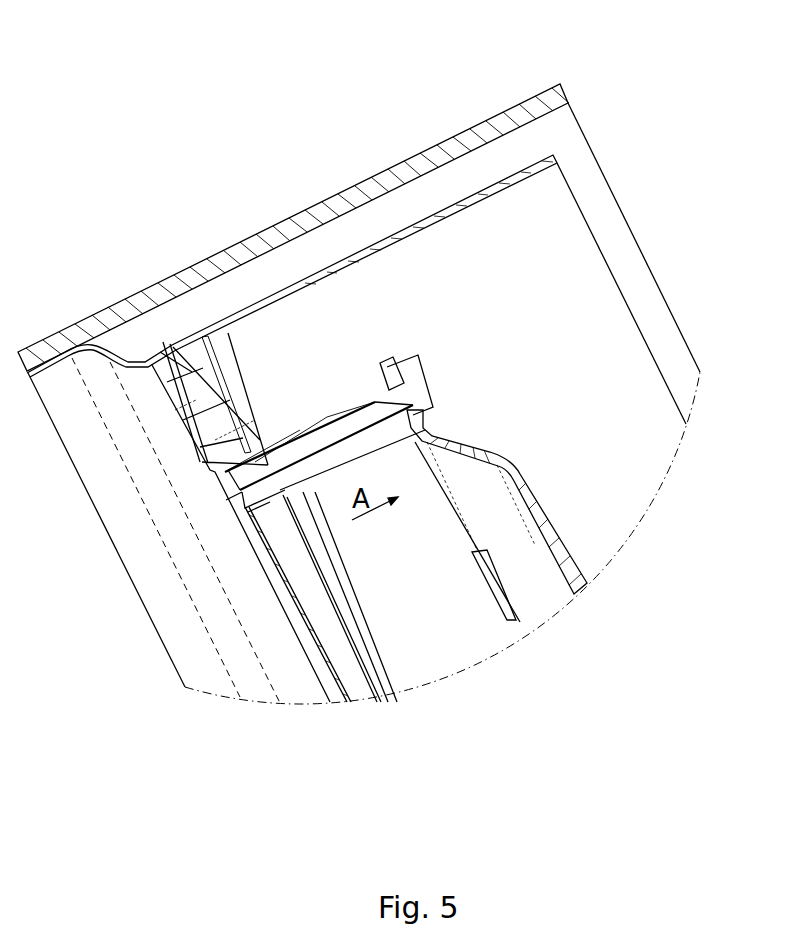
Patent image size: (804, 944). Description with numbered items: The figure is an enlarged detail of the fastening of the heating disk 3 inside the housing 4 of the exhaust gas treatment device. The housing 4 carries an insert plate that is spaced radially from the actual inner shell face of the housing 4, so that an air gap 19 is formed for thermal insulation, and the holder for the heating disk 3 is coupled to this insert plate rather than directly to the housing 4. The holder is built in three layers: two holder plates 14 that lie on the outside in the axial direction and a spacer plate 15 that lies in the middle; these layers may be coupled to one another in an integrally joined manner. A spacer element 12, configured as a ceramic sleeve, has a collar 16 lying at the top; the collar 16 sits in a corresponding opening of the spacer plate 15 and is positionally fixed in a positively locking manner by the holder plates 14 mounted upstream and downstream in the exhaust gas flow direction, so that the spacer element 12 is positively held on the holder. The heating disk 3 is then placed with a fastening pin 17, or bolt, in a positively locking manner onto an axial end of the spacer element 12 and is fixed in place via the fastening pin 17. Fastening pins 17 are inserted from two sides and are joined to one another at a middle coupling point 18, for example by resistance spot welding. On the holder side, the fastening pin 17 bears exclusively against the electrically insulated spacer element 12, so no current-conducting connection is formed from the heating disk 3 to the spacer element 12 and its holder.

The heating disk 3 is at (485, 443).
The housing 4 is at (500, 120).
The spacer element 12 is at (325, 430).
The holder plate 14 is at (277, 587).
The spacer plate 15 is at (360, 687).
The collar 16 is at (268, 498).
The fastening pin 17 is at (178, 360).
The coupling point 18 is at (257, 440).
The air gap 19 is at (466, 172).